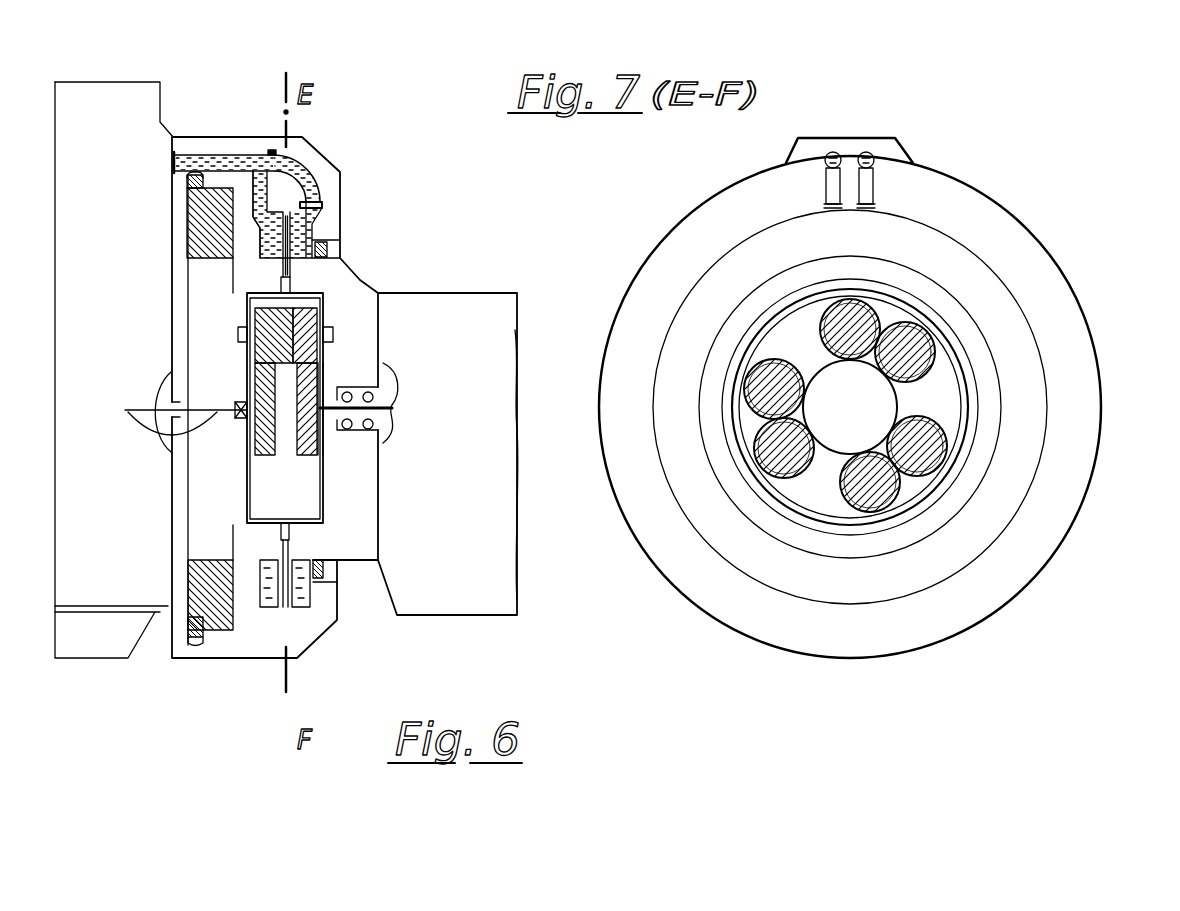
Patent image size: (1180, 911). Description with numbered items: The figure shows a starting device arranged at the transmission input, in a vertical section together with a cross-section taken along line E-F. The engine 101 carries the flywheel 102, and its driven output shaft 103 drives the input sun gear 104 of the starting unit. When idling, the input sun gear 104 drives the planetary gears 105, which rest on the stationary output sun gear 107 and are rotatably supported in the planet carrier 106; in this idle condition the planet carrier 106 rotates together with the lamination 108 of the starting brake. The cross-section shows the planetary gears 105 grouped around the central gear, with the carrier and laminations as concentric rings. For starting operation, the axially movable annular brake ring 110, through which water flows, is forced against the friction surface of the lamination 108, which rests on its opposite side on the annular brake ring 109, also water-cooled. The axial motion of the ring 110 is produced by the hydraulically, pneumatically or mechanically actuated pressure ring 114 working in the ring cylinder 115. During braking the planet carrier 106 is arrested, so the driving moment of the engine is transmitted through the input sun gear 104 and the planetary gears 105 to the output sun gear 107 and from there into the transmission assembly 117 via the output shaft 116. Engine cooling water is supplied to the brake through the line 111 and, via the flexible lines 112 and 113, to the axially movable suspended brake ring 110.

In FIG. 6, the engine 101 is at (122, 123).
In FIG. 6, the flywheel 102 is at (210, 228).
In FIG. 6, the driven output shaft 103 is at (166, 412).
In FIG. 6, the input sun gear 104 is at (255, 443).
In FIG. 6, the planetary gears 105 is at (260, 323).
In FIG. 7, the planetary gears 105 is at (738, 443).
In FIG. 6, the planet carrier 106 is at (308, 385).
In FIG. 7, the planet carrier 106 is at (910, 348).
In FIG. 6, the output sun gear 107 is at (320, 380).
In FIG. 7, the output sun gear 107 is at (877, 393).
In FIG. 6, the lamination 108 is at (283, 547).
In FIG. 7, the lamination 108 is at (912, 242).
In FIG. 6, the annular brake ring 109 is at (262, 248).
In FIG. 6, the annular brake ring 110 is at (313, 223).
In FIG. 6, the line 111 is at (218, 158).
In FIG. 6, the flexible line 112 is at (305, 167).
In FIG. 7, the flexible line 112 is at (830, 152).
In FIG. 7, the flexible line 113 is at (868, 152).
In FIG. 6, the pressure ring 114 is at (325, 572).
In FIG. 6, the ring cylinder 115 is at (318, 583).
In FIG. 6, the output shaft 116 is at (340, 432).
In FIG. 6, the transmission assembly 117 is at (453, 543).